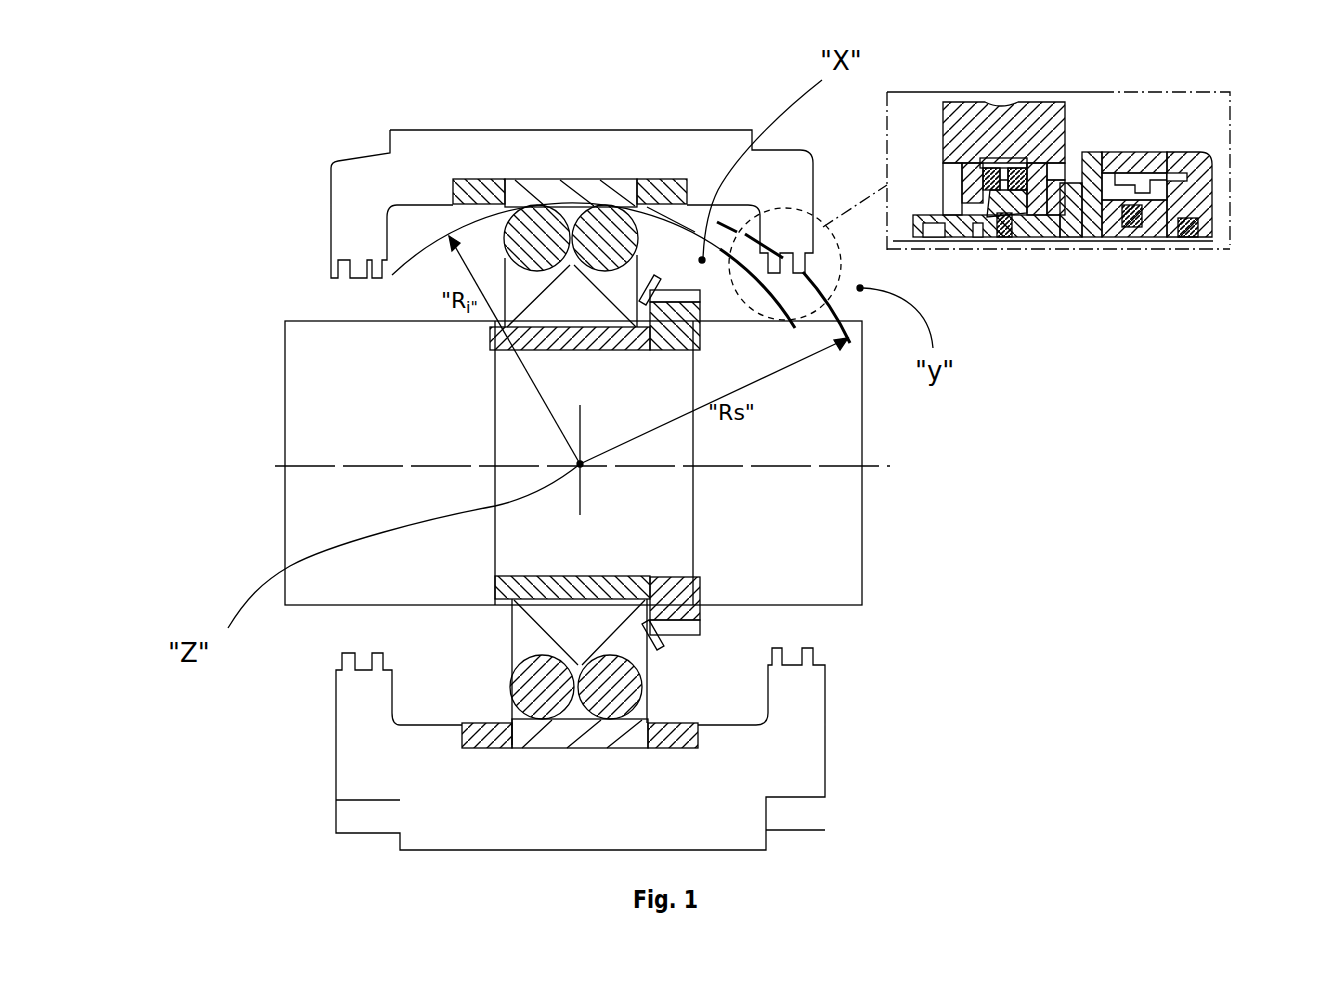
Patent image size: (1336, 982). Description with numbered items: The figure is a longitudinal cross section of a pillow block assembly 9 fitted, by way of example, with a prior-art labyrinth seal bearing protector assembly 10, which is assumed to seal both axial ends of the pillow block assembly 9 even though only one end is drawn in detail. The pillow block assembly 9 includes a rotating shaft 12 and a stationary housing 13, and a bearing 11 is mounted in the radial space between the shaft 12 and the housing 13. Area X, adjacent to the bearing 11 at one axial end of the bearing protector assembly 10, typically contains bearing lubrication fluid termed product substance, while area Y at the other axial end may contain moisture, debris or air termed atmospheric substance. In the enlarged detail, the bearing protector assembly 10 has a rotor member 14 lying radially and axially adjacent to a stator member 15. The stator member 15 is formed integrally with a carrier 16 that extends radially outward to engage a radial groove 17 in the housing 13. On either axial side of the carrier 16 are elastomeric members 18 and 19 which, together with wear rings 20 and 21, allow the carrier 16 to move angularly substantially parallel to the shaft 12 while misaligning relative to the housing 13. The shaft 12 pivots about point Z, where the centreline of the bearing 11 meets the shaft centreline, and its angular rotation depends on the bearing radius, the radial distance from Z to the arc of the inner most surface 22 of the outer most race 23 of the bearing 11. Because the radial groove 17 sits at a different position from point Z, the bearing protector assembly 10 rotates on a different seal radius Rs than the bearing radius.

The pillow block assembly 9 is at (701, 436).
The bearing protector assembly 10 is at (1095, 196).
The bearing 11 is at (597, 198).
The rotating shaft 12 is at (850, 560).
The stationary housing 13 is at (812, 705).
The rotor member 14 is at (1203, 181).
The stator member 15 is at (1141, 156).
The carrier 16 is at (1088, 156).
The radial groove 17 is at (990, 210).
The elastomeric member 18 is at (1027, 205).
The elastomeric member 19 is at (983, 175).
The wear ring 20 is at (1005, 245).
The wear ring 21 is at (1085, 242).
The inner most surface 22 is at (575, 203).
The outer most race 23 is at (563, 213).